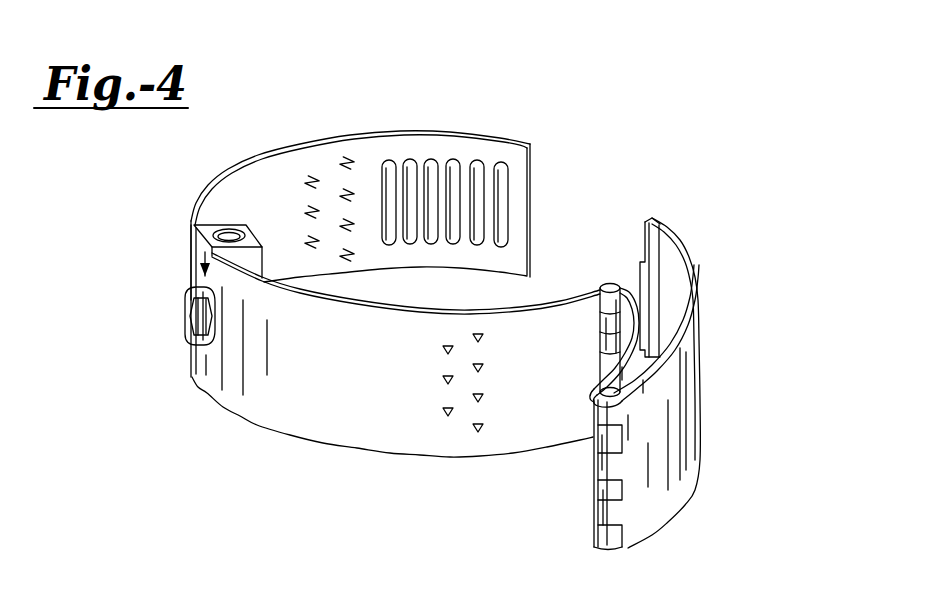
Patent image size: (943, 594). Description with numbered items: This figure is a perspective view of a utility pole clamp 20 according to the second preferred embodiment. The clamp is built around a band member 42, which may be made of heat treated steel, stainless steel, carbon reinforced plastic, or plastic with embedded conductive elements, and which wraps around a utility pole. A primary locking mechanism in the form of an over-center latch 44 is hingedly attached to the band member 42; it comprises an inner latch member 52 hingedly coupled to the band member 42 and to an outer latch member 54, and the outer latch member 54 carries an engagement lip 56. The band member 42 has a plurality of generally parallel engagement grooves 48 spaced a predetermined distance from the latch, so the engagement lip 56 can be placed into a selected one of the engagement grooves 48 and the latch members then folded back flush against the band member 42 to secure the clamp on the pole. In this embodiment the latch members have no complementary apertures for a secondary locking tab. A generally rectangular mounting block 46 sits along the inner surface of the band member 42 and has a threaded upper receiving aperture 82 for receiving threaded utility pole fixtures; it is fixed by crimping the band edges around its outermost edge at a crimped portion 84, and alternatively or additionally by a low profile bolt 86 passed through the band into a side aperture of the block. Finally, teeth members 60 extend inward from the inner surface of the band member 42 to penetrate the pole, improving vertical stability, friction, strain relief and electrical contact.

The utility pole clamp 20 is at (679, 224).
The band member 42 is at (346, 370).
The over-center latch 44 is at (703, 419).
The mounting block 46 is at (235, 220).
The engagement grooves 48 is at (412, 160).
The inner latch member 52 is at (625, 385).
The outer latch member 54 is at (697, 338).
The engagement lip 56 is at (652, 288).
The teeth members 60 is at (347, 158).
The upper receiving aperture 82 is at (248, 226).
The crimped portion 84 is at (192, 232).
The low profile bolt 86 is at (182, 308).